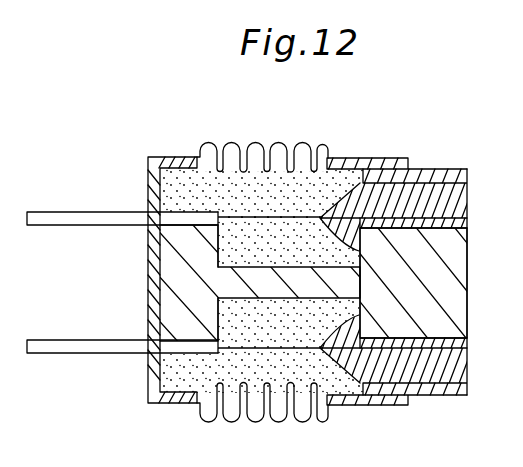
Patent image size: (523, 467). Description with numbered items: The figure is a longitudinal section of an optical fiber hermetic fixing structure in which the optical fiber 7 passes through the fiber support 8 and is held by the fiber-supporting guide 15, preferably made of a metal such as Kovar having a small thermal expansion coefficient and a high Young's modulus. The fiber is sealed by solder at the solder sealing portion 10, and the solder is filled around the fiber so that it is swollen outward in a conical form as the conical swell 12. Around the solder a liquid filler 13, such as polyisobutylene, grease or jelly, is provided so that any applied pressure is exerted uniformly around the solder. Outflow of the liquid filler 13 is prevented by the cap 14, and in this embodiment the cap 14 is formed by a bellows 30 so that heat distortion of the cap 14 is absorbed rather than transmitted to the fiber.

The optical fiber 7 is at (50, 215).
The fiber support 8 is at (172, 280).
The solder sealing portion 10 is at (430, 187).
The conical swell 12 is at (363, 180).
The liquid filler 13 is at (192, 182).
The cap 14 is at (337, 158).
The fiber-supporting guide 15 is at (463, 278).
The bellows 30 is at (238, 143).